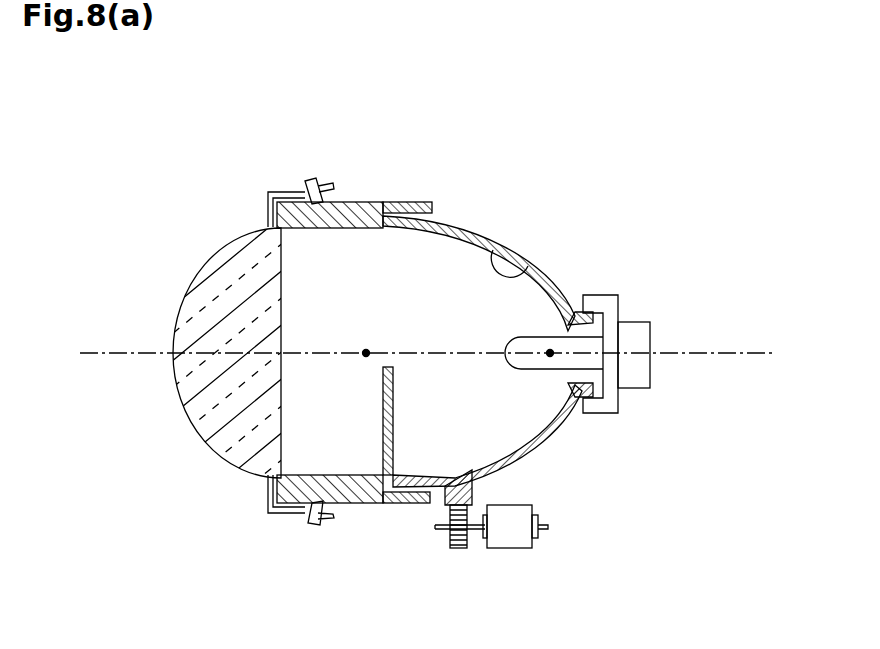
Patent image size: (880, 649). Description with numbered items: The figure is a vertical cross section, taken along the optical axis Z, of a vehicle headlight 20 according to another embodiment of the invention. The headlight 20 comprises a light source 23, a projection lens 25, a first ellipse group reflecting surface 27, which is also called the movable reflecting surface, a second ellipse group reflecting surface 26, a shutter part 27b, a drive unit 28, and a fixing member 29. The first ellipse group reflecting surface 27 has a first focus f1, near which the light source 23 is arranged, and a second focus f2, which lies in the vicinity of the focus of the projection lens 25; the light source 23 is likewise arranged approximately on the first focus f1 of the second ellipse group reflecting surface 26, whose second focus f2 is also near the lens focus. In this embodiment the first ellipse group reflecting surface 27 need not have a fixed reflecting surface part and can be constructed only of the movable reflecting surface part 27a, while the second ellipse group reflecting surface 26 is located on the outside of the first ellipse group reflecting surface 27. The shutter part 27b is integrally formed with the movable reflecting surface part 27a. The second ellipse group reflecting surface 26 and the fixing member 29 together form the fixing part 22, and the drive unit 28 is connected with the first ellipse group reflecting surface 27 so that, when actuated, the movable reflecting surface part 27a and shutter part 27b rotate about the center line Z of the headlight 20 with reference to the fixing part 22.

The vehicle headlight 20 is at (741, 88).
The fixing part 22 is at (371, 156).
The light source 23 is at (650, 351).
The projection lens 25 is at (233, 292).
The second ellipse group reflecting surface 26 is at (402, 202).
The first ellipse group reflecting surface 27 is at (547, 437).
The movable reflecting surface part 27a is at (502, 243).
The shutter part 27b is at (393, 423).
The drive unit 28 is at (478, 553).
The fixing member 29 is at (347, 490).
The first focus f1 is at (550, 353).
The second focus f2 is at (366, 353).
The optical axis Z is at (412, 354).